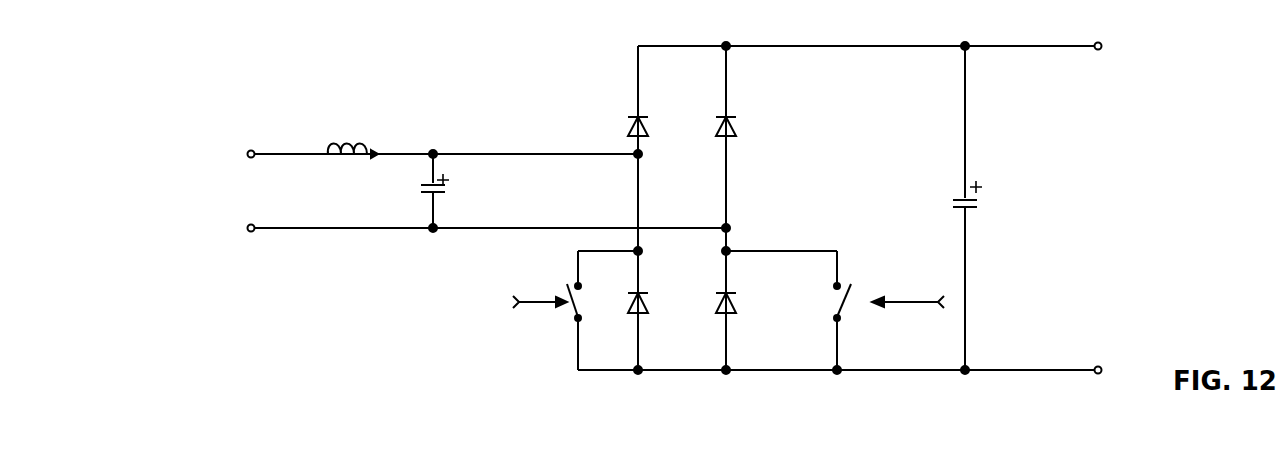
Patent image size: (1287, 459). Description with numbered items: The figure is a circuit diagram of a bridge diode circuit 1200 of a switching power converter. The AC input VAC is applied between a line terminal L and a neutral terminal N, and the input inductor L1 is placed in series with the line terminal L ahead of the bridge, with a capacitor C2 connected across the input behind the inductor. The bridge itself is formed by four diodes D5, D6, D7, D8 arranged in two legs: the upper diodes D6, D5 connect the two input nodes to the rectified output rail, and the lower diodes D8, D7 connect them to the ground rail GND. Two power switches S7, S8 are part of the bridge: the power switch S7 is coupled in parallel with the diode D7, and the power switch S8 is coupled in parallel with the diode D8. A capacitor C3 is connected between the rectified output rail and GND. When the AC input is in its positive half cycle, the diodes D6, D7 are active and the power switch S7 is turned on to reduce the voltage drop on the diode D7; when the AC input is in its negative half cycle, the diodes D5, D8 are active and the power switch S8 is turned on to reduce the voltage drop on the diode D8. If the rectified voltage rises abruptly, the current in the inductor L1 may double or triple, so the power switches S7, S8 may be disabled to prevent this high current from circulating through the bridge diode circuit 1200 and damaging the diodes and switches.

The bridge diode circuit 1200 is at (517, 62).
The input inductor L1 is at (353, 137).
The capacitor C2 is at (417, 191).
The capacitor C3 is at (947, 199).
The diode D5 is at (746, 127).
The diode D6 is at (658, 127).
The diode D7 is at (745, 304).
The diode D8 is at (658, 304).
The power switch S7 is at (871, 302).
The power switch S8 is at (565, 302).
The line input terminal L is at (275, 131).
The neutral input terminal N is at (277, 254).
The AC input voltage VAC is at (275, 193).
The ground GND is at (1025, 391).